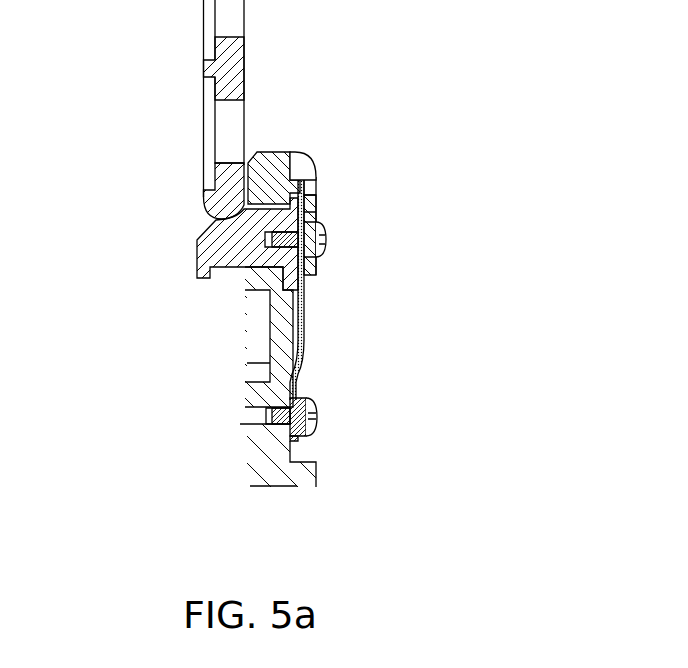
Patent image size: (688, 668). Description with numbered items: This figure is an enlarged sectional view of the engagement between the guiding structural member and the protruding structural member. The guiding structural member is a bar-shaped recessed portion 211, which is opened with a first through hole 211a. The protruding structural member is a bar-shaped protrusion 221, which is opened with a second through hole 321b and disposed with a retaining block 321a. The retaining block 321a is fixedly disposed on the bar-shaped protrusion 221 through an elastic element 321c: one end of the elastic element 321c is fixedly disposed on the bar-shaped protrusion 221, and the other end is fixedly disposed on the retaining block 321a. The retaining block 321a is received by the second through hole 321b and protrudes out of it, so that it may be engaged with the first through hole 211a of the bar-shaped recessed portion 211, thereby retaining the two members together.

The bar-shaped recessed portion 211 is at (224, 17).
The first through hole 211a is at (226, 122).
The retaining block 321a is at (200, 260).
The second through hole 321b is at (247, 290).
The elastic element 321c is at (303, 322).
The bar-shaped protrusion 221 is at (257, 453).